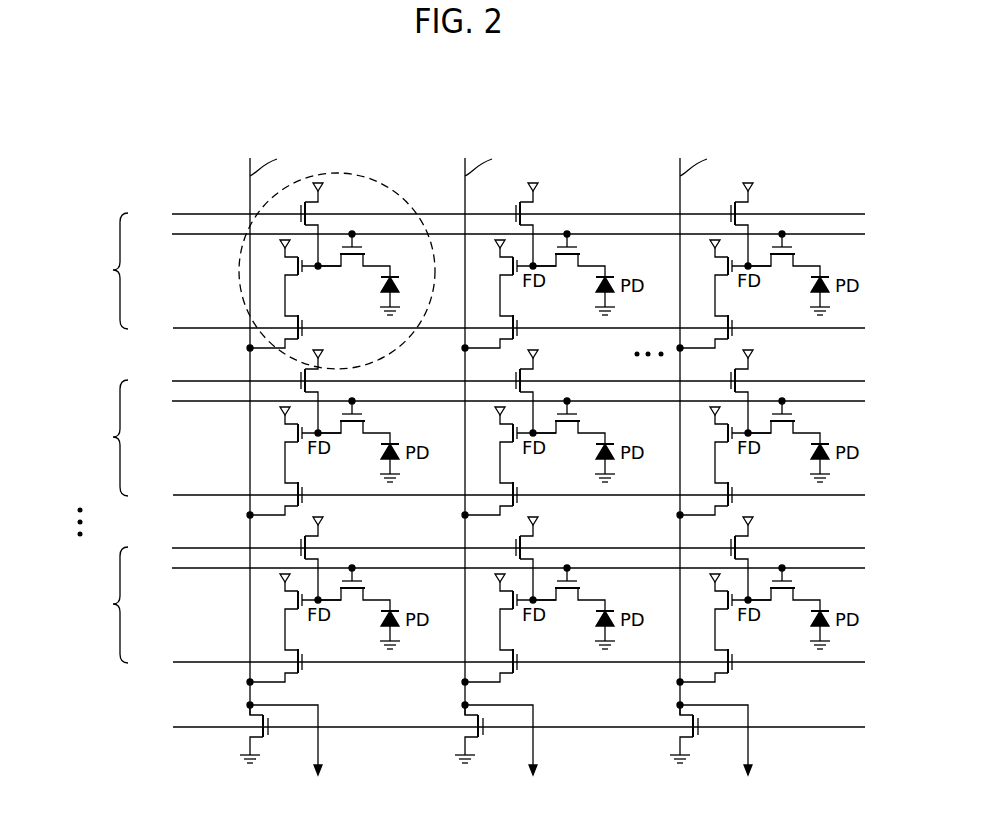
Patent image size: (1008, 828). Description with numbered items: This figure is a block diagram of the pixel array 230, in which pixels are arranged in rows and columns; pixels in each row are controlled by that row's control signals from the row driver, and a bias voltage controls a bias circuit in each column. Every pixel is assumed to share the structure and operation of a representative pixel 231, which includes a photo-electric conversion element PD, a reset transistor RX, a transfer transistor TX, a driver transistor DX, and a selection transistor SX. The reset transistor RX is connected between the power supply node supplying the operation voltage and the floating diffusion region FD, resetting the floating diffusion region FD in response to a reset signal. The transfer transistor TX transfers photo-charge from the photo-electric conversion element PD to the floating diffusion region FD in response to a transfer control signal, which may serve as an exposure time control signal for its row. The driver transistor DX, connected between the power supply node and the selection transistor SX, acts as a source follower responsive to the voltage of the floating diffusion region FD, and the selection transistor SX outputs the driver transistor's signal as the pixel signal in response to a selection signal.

The pixel array 230 is at (806, 134).
The pixel 231 is at (360, 177).
The reset transistor RX is at (324, 224).
The transfer transistor TX is at (354, 259).
The driver transistor DX is at (280, 278).
The selection transistor SX is at (274, 330).
The floating diffusion region FD is at (321, 277).
The photo-electric conversion element PD is at (405, 295).